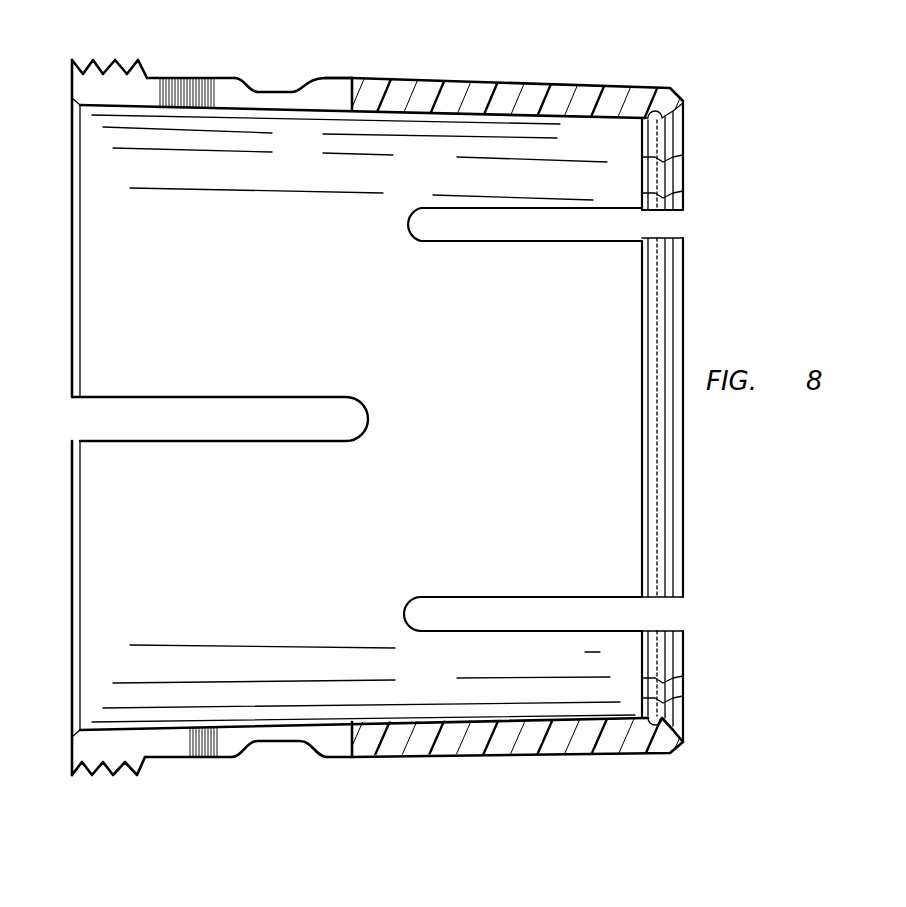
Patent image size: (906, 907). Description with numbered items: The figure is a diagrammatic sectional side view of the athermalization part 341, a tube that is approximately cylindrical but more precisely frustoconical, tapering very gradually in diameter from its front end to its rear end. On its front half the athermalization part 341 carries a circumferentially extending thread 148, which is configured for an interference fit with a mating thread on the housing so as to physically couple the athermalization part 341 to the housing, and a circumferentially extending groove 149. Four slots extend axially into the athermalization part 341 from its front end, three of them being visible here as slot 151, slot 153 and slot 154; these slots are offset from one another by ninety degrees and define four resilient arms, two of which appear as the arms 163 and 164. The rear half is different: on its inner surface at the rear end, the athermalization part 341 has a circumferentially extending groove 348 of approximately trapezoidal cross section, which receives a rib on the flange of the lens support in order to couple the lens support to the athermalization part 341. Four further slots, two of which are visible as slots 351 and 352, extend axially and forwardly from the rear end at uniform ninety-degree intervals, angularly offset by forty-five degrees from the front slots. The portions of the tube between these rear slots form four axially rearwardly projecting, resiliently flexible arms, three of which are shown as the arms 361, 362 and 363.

The thread 148 is at (100, 58).
The groove 149 is at (280, 90).
The slot 151 is at (348, 96).
The slot 153 is at (350, 751).
The slot 154 is at (346, 398).
The resilient arm 163 is at (105, 602).
The resilient arm 164 is at (105, 233).
The athermalization part 341 is at (499, 82).
The groove 348 is at (652, 126).
The slot 351 is at (428, 212).
The slot 352 is at (427, 623).
The arm 361 is at (618, 181).
The arm 362 is at (616, 492).
The arm 363 is at (616, 650).